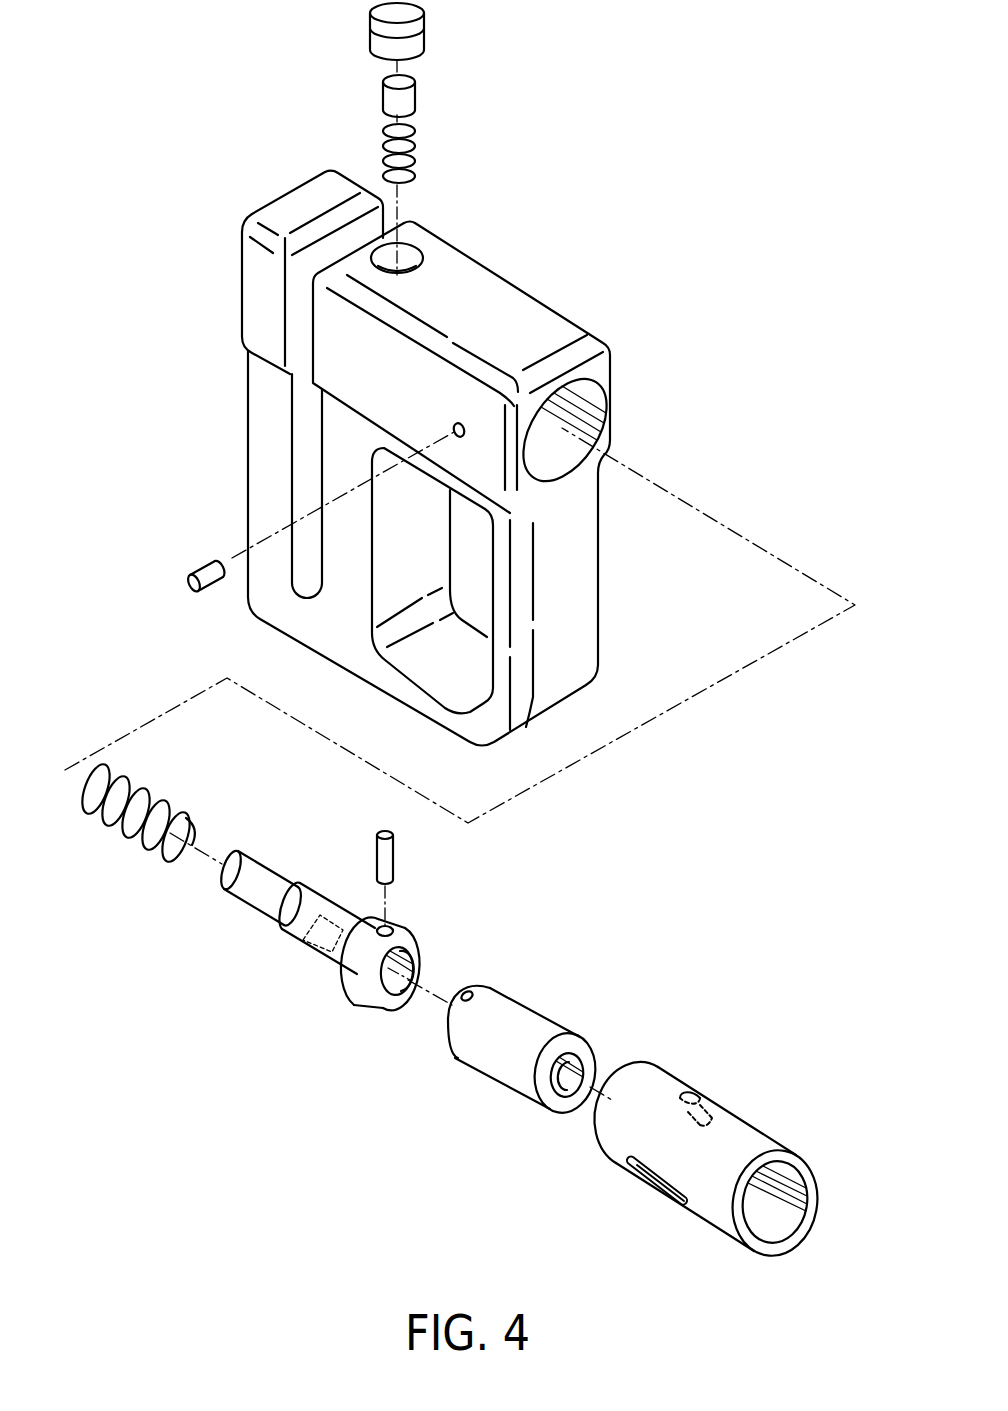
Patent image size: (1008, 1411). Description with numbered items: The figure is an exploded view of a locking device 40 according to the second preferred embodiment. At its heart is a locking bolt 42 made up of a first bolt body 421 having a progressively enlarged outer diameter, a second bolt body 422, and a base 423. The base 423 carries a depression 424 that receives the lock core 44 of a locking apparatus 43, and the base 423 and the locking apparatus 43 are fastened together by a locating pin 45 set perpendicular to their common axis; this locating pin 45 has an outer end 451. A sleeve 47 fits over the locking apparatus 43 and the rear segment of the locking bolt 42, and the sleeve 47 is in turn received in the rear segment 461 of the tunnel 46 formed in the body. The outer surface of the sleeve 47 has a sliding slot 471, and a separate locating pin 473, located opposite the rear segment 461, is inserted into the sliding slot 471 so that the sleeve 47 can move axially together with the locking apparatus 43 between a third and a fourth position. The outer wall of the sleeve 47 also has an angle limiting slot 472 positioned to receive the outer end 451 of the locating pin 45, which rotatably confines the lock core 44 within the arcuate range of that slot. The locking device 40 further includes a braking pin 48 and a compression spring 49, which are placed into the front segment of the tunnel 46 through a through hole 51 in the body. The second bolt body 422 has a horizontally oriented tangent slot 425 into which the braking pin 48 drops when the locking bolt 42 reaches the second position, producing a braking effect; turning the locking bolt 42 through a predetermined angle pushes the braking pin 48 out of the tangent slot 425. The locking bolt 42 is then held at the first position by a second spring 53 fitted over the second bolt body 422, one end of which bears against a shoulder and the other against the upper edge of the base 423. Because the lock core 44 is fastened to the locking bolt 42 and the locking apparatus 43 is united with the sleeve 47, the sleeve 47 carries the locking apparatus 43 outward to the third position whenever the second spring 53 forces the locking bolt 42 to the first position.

The locking device 40 is at (226, 433).
The locking bolt 42 is at (299, 953).
The first bolt body 421 is at (258, 873).
The second bolt body 422 is at (308, 900).
The base 423 is at (355, 978).
The depression 424 is at (395, 993).
The tangent slot 425 is at (307, 945).
The locking apparatus 43 is at (490, 1094).
The lock core 44 is at (452, 1027).
The locating pin 45 is at (442, 878).
The outer end 451 is at (393, 833).
The tunnel 46 is at (574, 420).
The rear segment 461 is at (558, 462).
The sleeve 47 is at (686, 1142).
The sliding slot 471 is at (667, 1182).
The angle limiting slot 472 is at (685, 1095).
The locating pin 473 is at (203, 572).
The braking pin 48 is at (418, 94).
The compression spring 49 is at (418, 157).
The through hole 51 is at (413, 258).
The second spring 53 is at (138, 852).